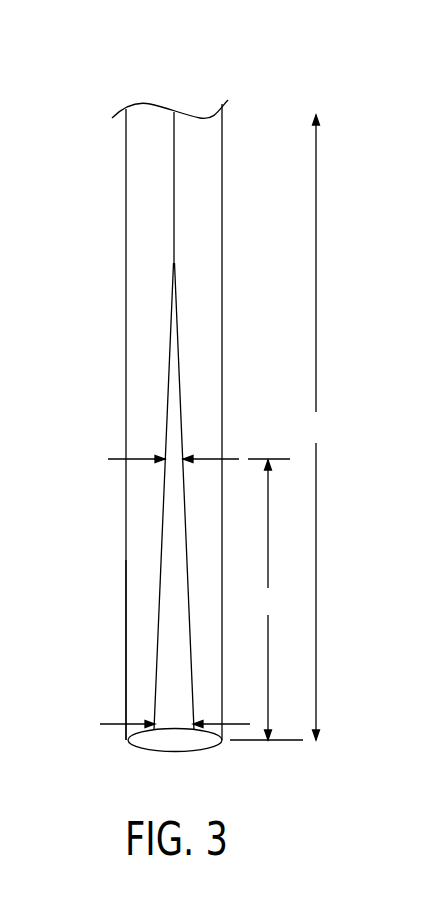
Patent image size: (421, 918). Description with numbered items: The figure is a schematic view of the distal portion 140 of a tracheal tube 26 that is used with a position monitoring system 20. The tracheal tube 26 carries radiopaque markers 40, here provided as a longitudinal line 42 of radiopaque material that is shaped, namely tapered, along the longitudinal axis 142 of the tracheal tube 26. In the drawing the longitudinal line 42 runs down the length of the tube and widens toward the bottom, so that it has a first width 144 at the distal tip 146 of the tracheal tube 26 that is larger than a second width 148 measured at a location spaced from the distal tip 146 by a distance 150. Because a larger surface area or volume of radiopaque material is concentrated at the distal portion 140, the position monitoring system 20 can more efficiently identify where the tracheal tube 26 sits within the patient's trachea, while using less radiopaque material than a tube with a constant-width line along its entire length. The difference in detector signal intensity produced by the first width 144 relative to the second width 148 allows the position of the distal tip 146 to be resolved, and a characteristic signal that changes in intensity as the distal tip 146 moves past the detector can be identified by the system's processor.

The position monitoring system 20 is at (292, 66).
The tracheal tube 26 is at (264, 106).
The radiopaque markers 40 is at (177, 196).
The longitudinal line 42 is at (241, 446).
The distal portion 140 is at (123, 690).
The longitudinal axis 142 is at (318, 427).
The first width 144 is at (123, 727).
The distal tip 146 is at (172, 752).
The second width 148 is at (138, 458).
The distance 150 is at (266, 599).